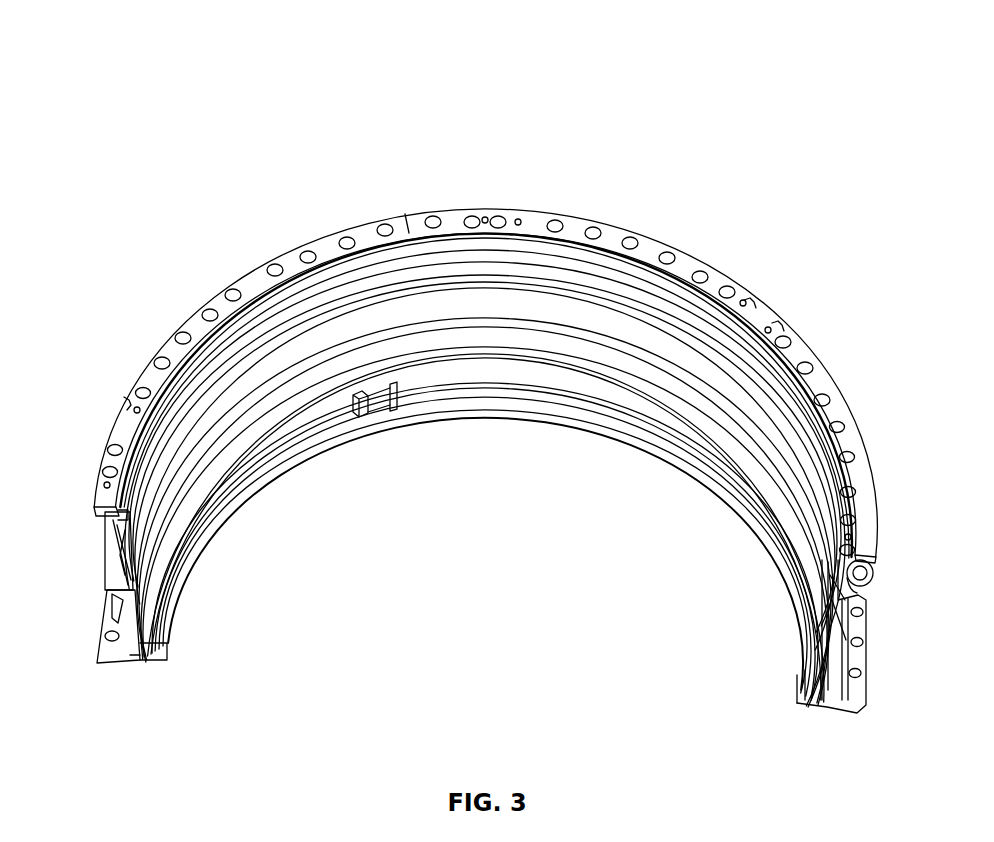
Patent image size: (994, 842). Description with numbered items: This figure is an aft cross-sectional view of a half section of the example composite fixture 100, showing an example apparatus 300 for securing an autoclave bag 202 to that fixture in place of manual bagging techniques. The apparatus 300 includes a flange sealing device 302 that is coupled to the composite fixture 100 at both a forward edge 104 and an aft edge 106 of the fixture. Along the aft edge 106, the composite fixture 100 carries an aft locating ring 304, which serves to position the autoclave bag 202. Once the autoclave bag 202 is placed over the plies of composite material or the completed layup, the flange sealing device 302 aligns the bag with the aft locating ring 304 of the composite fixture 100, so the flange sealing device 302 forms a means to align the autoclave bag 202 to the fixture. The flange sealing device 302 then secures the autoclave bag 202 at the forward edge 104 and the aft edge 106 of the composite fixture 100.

The apparatus 300 is at (711, 84).
The composite fixture 100 is at (521, 212).
The forward edge 104 is at (110, 660).
The aft edge 106 is at (100, 500).
The autoclave bag 202 is at (513, 316).
The flange sealing device 302 is at (115, 566).
The aft locating ring 304 is at (123, 447).